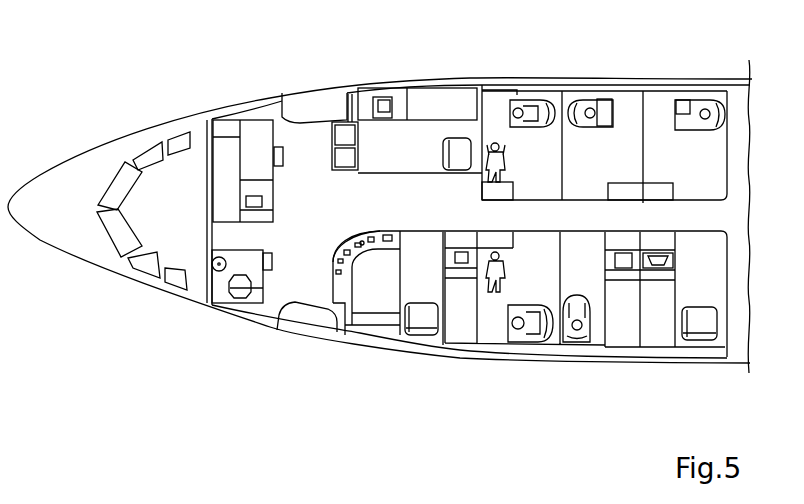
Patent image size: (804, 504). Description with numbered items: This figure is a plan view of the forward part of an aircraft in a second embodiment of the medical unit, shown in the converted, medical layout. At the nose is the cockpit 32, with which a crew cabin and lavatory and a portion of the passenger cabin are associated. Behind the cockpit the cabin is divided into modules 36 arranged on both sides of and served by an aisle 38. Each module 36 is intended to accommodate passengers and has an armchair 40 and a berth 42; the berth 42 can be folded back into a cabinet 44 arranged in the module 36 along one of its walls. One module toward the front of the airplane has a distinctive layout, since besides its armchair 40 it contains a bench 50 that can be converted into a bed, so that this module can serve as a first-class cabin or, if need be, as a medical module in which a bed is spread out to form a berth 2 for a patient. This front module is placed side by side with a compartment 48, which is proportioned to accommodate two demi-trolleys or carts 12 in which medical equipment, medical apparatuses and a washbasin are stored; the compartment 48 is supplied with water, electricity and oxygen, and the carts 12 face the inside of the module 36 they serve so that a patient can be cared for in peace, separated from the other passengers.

The berth 2 is at (415, 102).
The carts 12 is at (334, 156).
The cockpit 32 is at (152, 185).
The modules 36 is at (498, 127).
The aisle 38 is at (694, 224).
The armchair 40 is at (443, 153).
The berth 42 is at (660, 337).
The cabinet 44 is at (673, 190).
The compartment 48 is at (352, 108).
The bench 50 is at (448, 100).